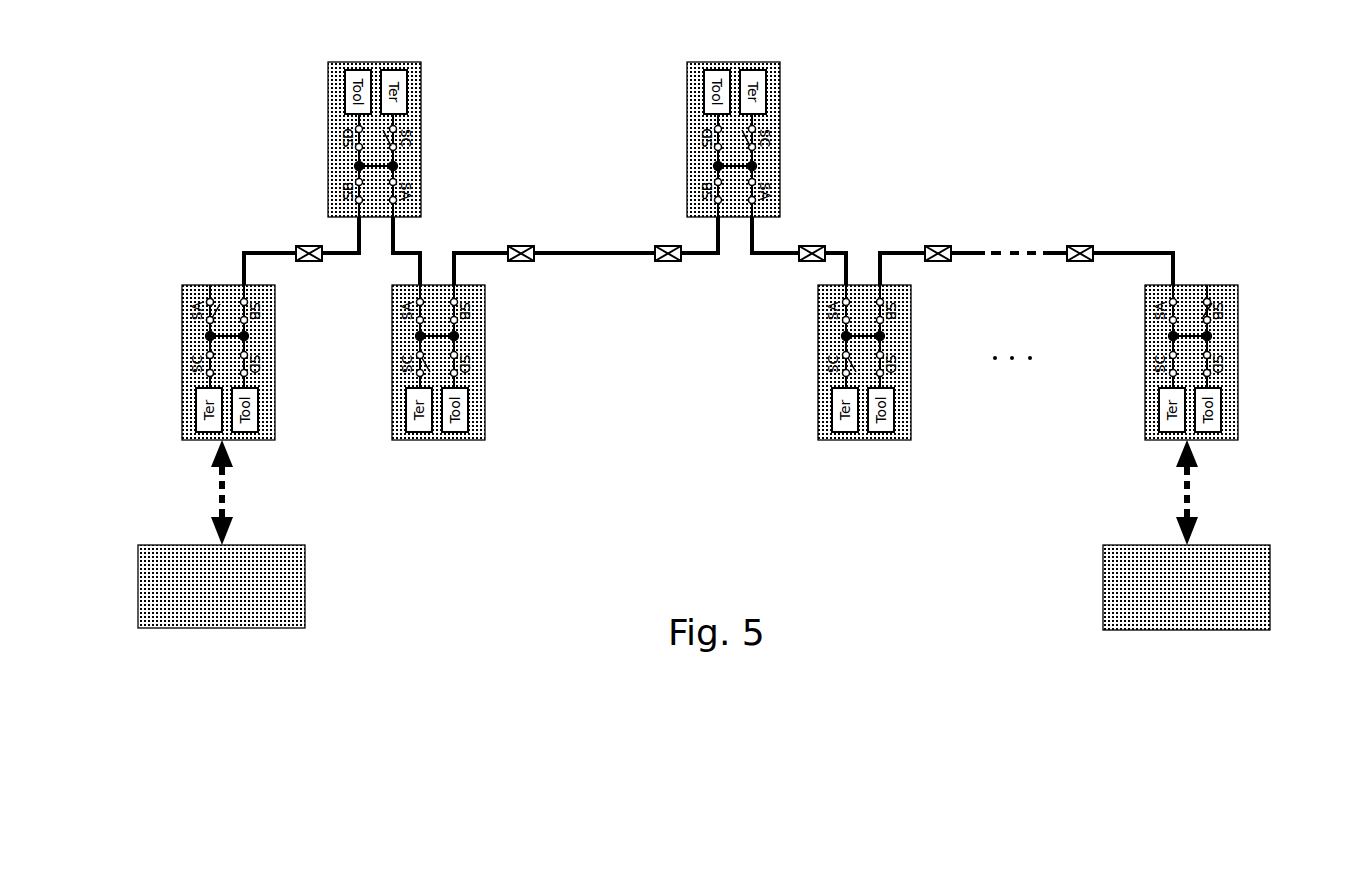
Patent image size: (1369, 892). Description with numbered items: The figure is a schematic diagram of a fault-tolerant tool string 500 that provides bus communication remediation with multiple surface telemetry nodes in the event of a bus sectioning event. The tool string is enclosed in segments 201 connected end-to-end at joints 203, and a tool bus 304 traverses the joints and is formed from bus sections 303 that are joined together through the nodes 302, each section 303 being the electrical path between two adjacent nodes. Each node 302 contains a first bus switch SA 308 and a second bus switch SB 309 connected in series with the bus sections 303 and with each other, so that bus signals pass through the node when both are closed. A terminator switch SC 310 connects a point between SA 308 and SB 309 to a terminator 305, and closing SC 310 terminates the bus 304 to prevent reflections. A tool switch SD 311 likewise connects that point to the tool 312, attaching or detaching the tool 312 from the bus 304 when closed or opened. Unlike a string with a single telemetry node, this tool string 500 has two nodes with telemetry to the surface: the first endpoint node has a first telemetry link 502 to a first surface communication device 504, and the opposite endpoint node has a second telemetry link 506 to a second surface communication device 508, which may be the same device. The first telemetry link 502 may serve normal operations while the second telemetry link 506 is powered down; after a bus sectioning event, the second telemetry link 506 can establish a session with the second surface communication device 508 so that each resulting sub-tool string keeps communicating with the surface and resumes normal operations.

The fault-tolerant tool string 500 is at (255, 70).
The node 302 is at (322, 134).
The bus section 303 is at (713, 221).
The joint 203 is at (1083, 226).
The tool bus 304 is at (1187, 250).
The segment 201 is at (1270, 268).
The second bus switch (SB) 309 is at (1241, 307).
The tool switch (SD) 311 is at (1241, 362).
The tool 312 is at (1223, 412).
The first bus switch (SA) 308 is at (180, 307).
The terminator switch (SC) 310 is at (180, 365).
The terminator 305 is at (194, 410).
The first telemetry link 502 is at (214, 500).
The first surface communication device 504 is at (136, 587).
The second telemetry link 506 is at (1179, 500).
The second surface communication device 508 is at (1101, 587).